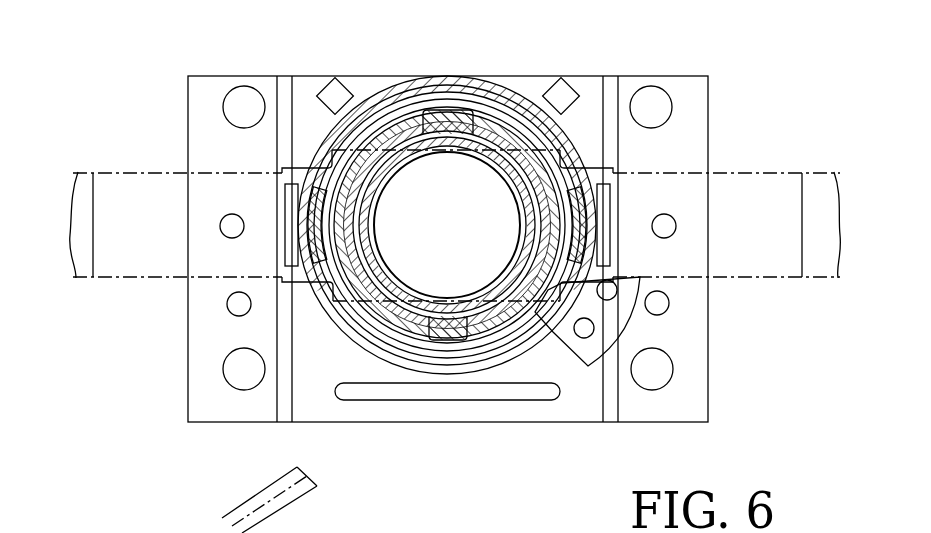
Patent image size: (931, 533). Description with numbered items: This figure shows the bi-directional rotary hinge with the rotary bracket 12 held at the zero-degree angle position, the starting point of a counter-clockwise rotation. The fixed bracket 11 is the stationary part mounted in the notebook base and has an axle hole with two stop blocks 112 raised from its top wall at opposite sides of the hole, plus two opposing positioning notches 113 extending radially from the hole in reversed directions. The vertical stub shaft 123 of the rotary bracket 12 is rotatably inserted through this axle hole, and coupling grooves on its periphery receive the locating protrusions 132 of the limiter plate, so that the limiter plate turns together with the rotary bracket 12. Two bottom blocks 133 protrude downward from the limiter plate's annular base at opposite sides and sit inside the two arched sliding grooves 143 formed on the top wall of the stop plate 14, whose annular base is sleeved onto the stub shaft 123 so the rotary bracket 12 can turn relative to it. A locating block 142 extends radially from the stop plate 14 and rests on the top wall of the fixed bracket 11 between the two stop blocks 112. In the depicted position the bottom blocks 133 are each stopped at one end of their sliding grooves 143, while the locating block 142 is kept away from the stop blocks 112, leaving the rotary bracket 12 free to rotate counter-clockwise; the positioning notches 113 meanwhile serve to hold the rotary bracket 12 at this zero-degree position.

The fixed bracket 11 is at (181, 68).
The rotary bracket 12 is at (797, 155).
The stop plate 14 is at (396, 76).
The stop blocks 112 is at (338, 93).
The positioning notches 113 is at (296, 200).
The vertical stub shaft 123 is at (450, 115).
The locating protrusions 132 is at (407, 123).
The bottom blocks 133 is at (305, 190).
The locating block 142 is at (625, 318).
The arched sliding grooves 143 is at (492, 127).